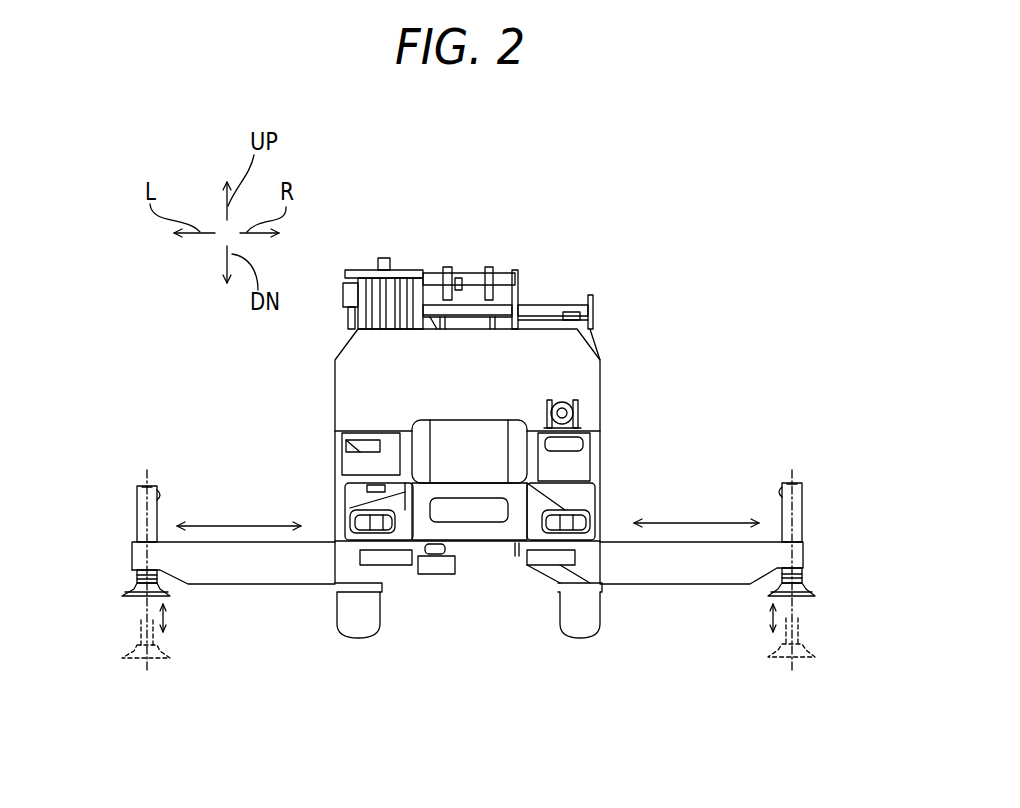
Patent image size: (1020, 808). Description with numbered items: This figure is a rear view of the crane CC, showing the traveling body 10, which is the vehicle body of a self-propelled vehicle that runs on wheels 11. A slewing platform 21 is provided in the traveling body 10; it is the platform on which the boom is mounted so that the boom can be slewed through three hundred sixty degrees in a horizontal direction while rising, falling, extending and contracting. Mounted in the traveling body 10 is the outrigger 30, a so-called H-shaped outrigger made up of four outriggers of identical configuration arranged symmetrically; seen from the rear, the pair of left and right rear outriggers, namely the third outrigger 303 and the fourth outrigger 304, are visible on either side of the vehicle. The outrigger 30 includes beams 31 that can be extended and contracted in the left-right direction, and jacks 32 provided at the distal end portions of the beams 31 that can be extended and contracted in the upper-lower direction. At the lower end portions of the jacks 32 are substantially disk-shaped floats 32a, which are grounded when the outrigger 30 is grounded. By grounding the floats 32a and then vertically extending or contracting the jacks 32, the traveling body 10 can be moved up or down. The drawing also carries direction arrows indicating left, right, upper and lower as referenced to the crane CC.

The traveling body 10 is at (330, 498).
The wheels 11 is at (357, 627).
The slewing platform 21 is at (602, 398).
The outrigger 30 is at (709, 438).
The beams 31 is at (270, 576).
The jacks 32 is at (137, 506).
The floats 32a is at (132, 599).
The third outrigger 303 is at (152, 484).
The fourth outrigger 304 is at (793, 483).
The crane CC is at (578, 266).